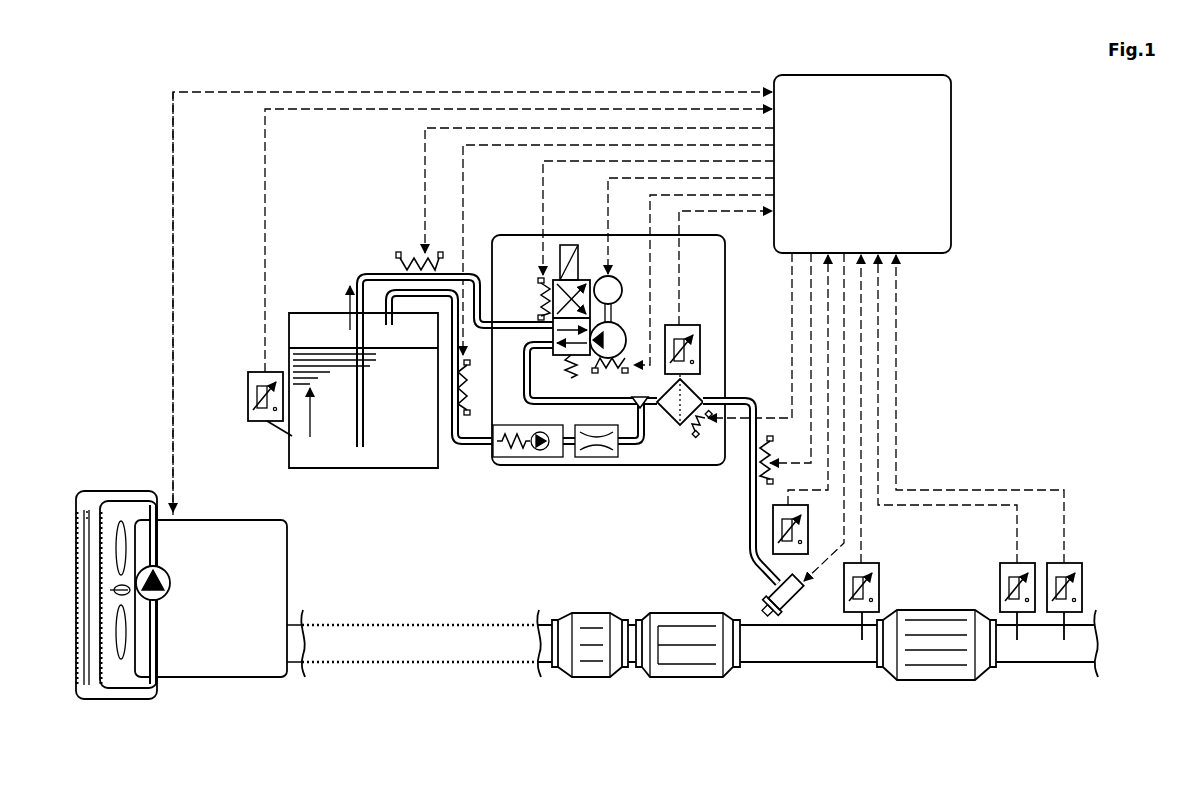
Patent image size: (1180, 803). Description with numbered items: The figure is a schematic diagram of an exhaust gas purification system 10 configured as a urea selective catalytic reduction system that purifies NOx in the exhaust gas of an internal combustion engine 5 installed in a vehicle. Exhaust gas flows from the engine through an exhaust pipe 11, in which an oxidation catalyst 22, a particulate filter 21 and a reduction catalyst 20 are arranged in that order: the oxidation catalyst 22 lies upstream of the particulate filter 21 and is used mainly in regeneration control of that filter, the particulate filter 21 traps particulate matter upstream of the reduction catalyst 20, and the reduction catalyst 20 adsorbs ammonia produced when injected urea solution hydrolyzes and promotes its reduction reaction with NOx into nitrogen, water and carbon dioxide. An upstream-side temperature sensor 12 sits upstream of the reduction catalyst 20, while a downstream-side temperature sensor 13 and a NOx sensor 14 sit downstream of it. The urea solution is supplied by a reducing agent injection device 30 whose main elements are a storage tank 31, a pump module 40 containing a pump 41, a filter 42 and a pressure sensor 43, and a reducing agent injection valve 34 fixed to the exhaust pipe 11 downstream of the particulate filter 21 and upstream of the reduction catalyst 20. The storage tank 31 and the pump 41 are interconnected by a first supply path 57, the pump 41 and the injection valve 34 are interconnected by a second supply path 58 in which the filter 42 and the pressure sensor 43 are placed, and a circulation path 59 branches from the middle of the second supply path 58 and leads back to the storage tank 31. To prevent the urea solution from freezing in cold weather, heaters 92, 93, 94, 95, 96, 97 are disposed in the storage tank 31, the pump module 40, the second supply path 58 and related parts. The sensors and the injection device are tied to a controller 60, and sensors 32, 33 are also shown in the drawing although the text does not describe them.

The internal combustion engine 5 is at (181, 595).
The exhaust gas purification system 10 is at (1000, 308).
The exhaust pipe 11 is at (806, 664).
The upstream-side temperature sensor 12 is at (870, 566).
The downstream-side temperature sensor 13 is at (1020, 566).
The NOx sensor 14 is at (1070, 566).
The reduction catalyst 20 is at (957, 681).
The particulate filter 21 is at (700, 678).
The oxidation catalyst 22 is at (593, 678).
The reducing agent injection device 30 is at (372, 208).
The storage tank 31 is at (386, 449).
The tank temperature sensor 32 is at (265, 424).
The pipe temperature sensor 33 is at (806, 544).
The reducing agent injection valve 34 is at (776, 601).
The pump module 40 is at (640, 466).
The pump 41 is at (619, 274).
The filter 42 is at (673, 428).
The pressure sensor 43 is at (703, 350).
The first supply path 57 is at (452, 272).
The second supply path 58 is at (749, 514).
The circulation path 59 is at (456, 446).
The controller 60 is at (862, 164).
The heater 92 is at (397, 258).
The heater 93 is at (470, 442).
The heater 94 is at (546, 296).
The heater 95 is at (611, 378).
The heater 96 is at (694, 437).
The heater 97 is at (770, 457).